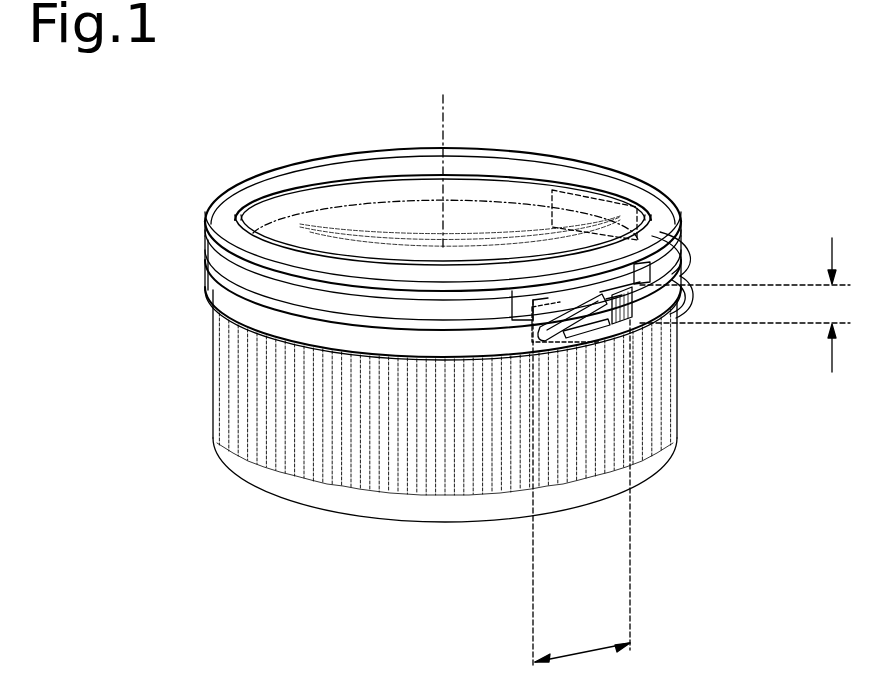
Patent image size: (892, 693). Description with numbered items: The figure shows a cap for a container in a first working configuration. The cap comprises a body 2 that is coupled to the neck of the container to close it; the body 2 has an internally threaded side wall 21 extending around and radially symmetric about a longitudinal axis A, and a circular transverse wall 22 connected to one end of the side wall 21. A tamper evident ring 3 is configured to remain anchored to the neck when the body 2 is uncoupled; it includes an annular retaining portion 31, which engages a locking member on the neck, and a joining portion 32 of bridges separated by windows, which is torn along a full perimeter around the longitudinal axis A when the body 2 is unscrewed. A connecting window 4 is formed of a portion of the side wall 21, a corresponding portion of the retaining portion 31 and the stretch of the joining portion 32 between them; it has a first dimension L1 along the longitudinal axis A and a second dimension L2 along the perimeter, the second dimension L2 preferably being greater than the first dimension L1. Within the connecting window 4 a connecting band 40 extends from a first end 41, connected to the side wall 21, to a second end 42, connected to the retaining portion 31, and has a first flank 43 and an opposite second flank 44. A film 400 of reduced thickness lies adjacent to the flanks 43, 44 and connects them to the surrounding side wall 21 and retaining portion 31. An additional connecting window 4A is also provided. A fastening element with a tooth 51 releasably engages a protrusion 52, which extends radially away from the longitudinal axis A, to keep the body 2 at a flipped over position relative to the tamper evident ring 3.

The body 2 is at (388, 444).
The side wall 21 is at (295, 440).
The transverse wall 22 is at (437, 524).
The tamper evident ring 3 is at (396, 208).
The retaining portion 31 is at (296, 164).
The joining portion 32 is at (230, 297).
The connecting window 4 is at (638, 304).
The additional connecting window 4A is at (605, 189).
The connecting band 40 is at (589, 350).
The film 400 is at (548, 317).
The first end 41 is at (618, 330).
The second end 42 is at (608, 290).
The first flank 43 is at (563, 336).
The second flank 44 is at (668, 240).
The tooth 51 is at (686, 262).
The protrusion 52 is at (698, 305).
The longitudinal axis A is at (445, 114).
The first dimension L1 is at (745, 305).
The second dimension L2 is at (581, 483).